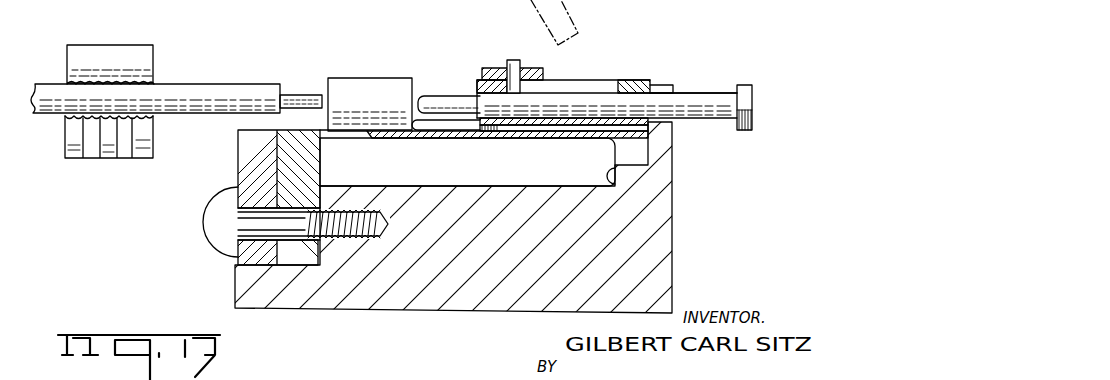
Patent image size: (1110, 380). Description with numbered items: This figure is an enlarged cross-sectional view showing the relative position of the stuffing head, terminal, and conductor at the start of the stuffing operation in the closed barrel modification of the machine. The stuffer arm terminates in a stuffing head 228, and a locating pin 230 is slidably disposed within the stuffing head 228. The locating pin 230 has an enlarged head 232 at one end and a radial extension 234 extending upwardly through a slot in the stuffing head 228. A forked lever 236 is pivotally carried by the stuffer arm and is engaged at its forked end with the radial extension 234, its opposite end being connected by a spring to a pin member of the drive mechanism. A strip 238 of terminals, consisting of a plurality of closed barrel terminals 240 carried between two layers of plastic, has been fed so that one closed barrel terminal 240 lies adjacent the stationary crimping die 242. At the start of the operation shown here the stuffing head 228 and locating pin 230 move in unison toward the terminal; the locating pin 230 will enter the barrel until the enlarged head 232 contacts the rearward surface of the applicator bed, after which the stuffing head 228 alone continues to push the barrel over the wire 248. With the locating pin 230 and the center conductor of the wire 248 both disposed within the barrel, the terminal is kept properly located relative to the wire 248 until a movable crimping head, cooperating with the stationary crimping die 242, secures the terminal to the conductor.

The stuffing head 228 is at (634, 82).
The locating pin 230 is at (444, 98).
The enlarged head 232 is at (753, 110).
The radial extension 234 is at (512, 58).
The forked lever 236 is at (538, 70).
The strip 238 is at (568, 130).
The closed barrel terminal 240 is at (354, 78).
The stationary crimping die 242 is at (282, 157).
The wire 248 is at (203, 97).